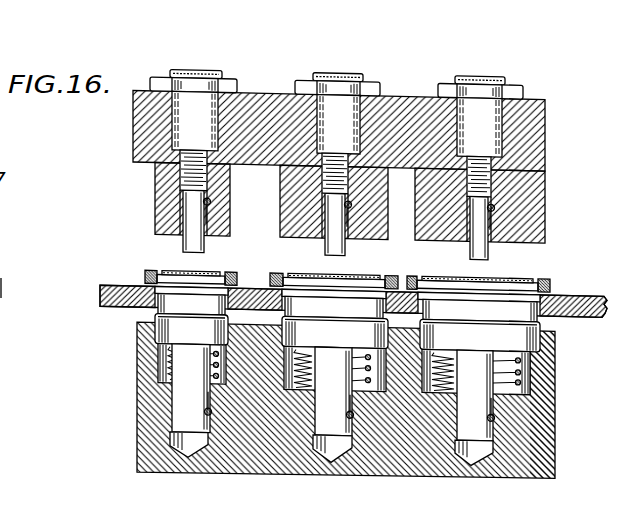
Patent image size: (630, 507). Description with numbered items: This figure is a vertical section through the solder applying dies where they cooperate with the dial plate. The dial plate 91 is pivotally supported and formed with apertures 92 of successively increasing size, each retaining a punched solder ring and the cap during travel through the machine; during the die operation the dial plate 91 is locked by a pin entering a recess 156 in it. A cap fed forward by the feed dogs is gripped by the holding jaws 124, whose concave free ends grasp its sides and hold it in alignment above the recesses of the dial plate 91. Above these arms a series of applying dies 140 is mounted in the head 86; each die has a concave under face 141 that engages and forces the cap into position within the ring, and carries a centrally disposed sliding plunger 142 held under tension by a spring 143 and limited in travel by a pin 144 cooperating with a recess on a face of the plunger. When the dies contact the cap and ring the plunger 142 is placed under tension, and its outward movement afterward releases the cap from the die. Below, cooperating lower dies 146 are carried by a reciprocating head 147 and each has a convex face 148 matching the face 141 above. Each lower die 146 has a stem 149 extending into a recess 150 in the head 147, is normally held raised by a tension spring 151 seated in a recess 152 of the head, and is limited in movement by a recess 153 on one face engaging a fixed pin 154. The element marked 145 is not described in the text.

The head plate 86 is at (545, 130).
The applying dies 140 is at (158, 184).
The concave under face 141 is at (210, 242).
The sliding plunger 142 is at (323, 248).
The spring 143 is at (323, 172).
The pin 144 is at (210, 206).
The bore 145 is at (198, 210).
The holding jaws 124 is at (150, 284).
The recess 156 is at (0, 298).
The apertures 92 is at (547, 295).
The dial plate 91 is at (586, 312).
The convex face 148 is at (543, 322).
The lower dies 146 is at (347, 323).
The recess 153 is at (263, 390).
The stem 149 is at (477, 395).
The recess 152 is at (532, 373).
The tension spring 151 is at (553, 393).
The fixed pin 154 is at (352, 413).
The recess 150 is at (487, 443).
The reciprocating head 147 is at (440, 460).